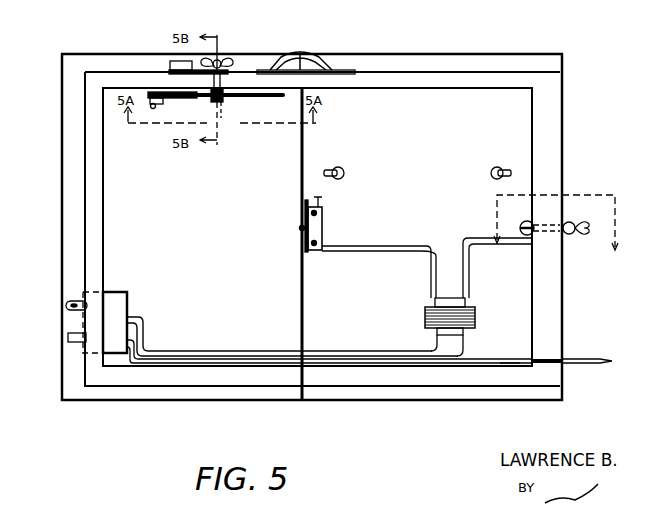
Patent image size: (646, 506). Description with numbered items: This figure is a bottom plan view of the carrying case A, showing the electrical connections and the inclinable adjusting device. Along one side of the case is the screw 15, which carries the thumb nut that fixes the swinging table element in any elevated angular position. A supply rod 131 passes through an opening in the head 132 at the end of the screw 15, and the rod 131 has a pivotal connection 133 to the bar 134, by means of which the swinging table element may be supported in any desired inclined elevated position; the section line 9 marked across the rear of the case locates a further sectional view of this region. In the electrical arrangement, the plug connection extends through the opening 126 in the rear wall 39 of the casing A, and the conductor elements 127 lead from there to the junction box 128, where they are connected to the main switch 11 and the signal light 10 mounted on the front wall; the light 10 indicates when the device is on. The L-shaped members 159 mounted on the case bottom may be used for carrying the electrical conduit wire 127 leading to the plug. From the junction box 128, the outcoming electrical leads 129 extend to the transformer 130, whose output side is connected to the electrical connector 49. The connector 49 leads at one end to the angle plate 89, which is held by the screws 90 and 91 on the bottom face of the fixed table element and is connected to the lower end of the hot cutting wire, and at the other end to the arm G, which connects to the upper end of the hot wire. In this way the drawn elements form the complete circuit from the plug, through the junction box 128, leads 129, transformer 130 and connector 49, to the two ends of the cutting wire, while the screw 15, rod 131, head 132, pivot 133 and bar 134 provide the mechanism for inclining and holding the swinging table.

The screw 15 is at (223, 57).
The supply rod 131 is at (247, 97).
The head 132 is at (222, 104).
The pivotal connection 133 is at (154, 108).
The bar 134 is at (150, 103).
The L-shaped members 159 is at (492, 168).
The angle plate 89 is at (323, 226).
The screw 90 is at (321, 195).
The screw 91 is at (322, 245).
The electrical connector 49 is at (466, 241).
The transformer 130 is at (423, 316).
The electrical leads 129 is at (141, 332).
The junction box 128 is at (116, 296).
The light 10 is at (67, 307).
The main switch 11 is at (68, 340).
The opening 126 is at (565, 357).
The conductor elements 127 is at (507, 366).
The rear wall 39 is at (543, 295).
The arm G is at (572, 236).
The section line 9- 9 is at (555, 234).
The carrying case A is at (562, 127).